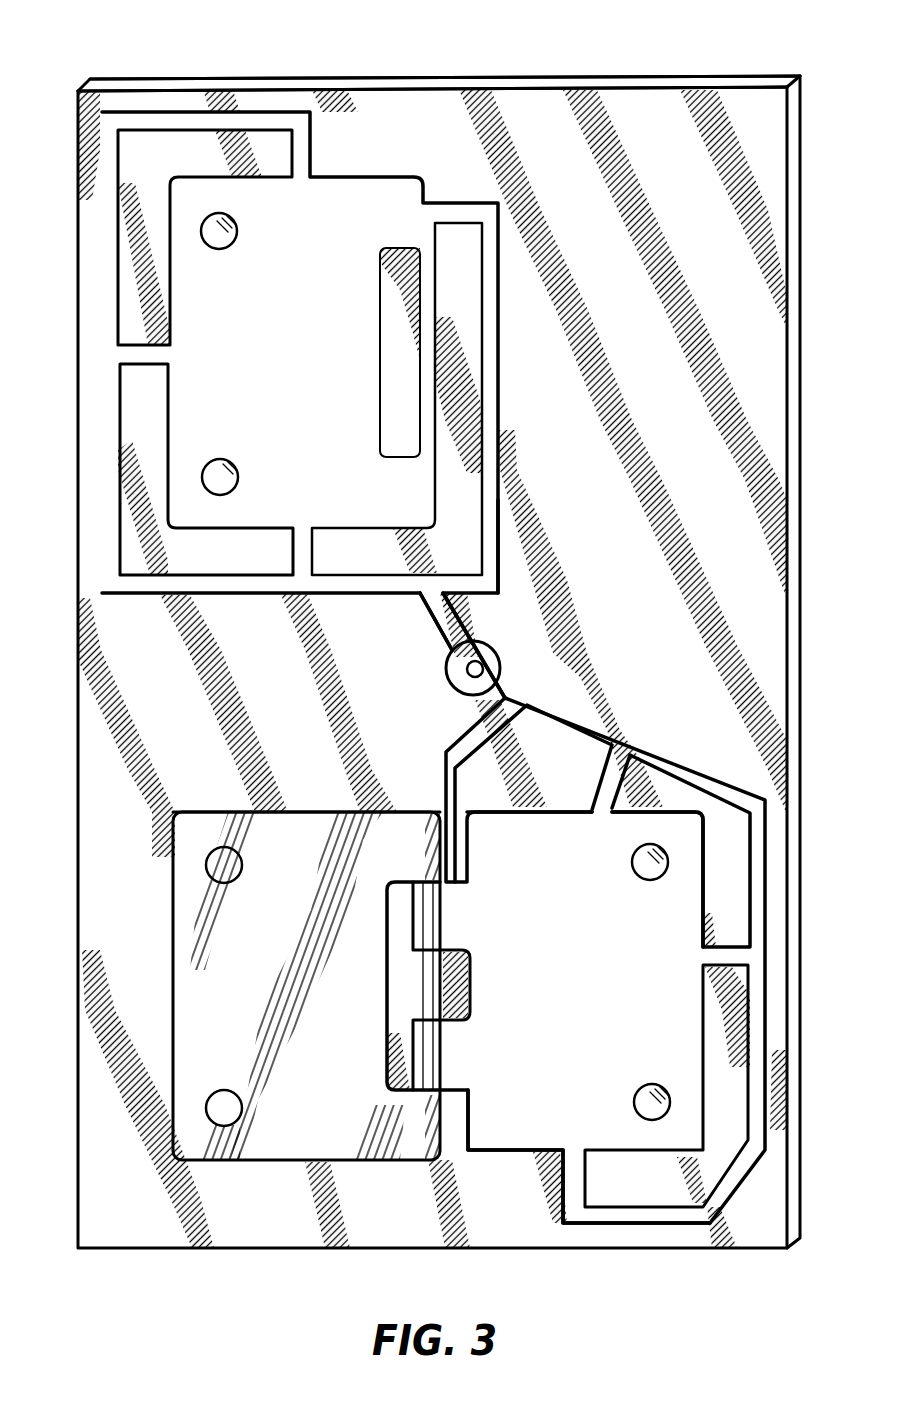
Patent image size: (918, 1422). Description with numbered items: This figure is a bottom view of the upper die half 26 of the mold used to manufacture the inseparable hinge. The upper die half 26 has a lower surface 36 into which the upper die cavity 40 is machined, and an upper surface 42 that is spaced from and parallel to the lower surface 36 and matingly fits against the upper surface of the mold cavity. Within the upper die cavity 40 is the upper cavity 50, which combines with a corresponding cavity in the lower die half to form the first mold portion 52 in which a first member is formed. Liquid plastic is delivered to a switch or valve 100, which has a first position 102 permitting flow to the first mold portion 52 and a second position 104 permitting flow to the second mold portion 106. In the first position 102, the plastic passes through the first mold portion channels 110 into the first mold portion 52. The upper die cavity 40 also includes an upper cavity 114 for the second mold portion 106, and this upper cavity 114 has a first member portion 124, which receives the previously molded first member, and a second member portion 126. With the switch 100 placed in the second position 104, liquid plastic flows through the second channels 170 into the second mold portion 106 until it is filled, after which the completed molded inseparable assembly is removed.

The upper die half 26 is at (91, 33).
The lower surface 36 is at (452, 104).
The upper surface 42 is at (513, 80).
The first mold portion 52 is at (516, 168).
The upper cavity 50 is at (397, 177).
The upper die cavity 40 is at (578, 529).
The first mold portion channels 110 is at (265, 598).
The first position 102 is at (456, 641).
The switch or valve 100 is at (452, 684).
The second position 104 is at (506, 691).
The second channels 170 is at (650, 752).
The second mold portion 106 is at (222, 773).
The first member portion 124 is at (182, 920).
The upper cavity 114 is at (433, 798).
The second member portion 126 is at (526, 1162).